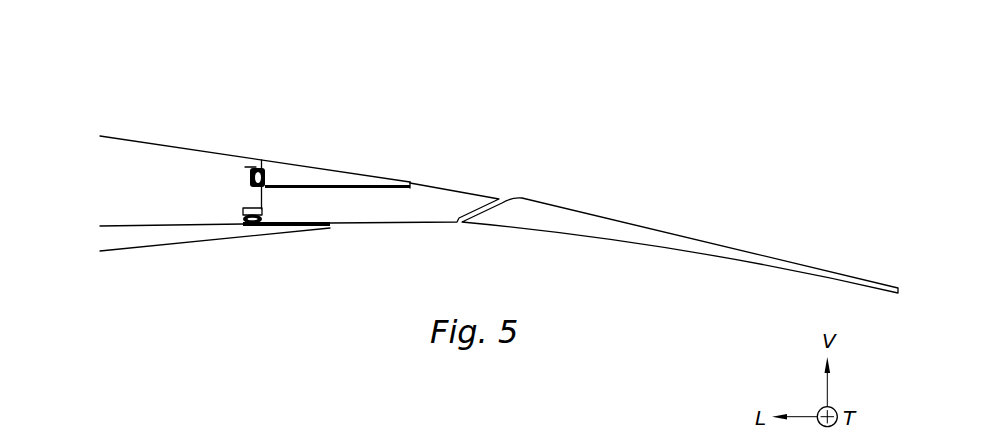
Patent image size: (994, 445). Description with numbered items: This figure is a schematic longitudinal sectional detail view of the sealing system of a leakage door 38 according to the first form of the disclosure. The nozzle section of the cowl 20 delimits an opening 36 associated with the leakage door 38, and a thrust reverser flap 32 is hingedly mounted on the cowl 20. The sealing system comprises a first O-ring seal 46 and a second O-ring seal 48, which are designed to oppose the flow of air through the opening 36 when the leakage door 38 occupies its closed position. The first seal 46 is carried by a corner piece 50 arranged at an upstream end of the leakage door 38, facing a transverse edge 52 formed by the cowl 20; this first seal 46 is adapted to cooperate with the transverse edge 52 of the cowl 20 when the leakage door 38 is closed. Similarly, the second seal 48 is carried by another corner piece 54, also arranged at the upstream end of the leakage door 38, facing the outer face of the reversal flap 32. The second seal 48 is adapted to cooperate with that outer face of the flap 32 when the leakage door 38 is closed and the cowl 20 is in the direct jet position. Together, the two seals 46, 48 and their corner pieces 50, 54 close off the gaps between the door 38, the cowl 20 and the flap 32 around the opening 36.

The cowl 20 is at (471, 132).
The thrust reverser flap 32 is at (205, 258).
The opening 36 is at (486, 176).
The leakage door 38 is at (404, 240).
The first O-ring seal 46 is at (261, 160).
The second O-ring seal 48 is at (263, 227).
The corner piece 50 is at (252, 166).
The transverse edge 52 is at (267, 178).
The corner piece 54 is at (240, 213).